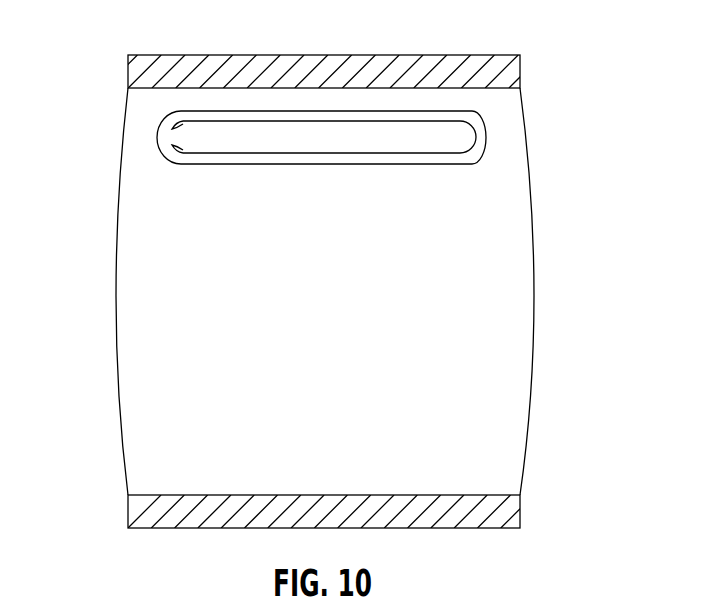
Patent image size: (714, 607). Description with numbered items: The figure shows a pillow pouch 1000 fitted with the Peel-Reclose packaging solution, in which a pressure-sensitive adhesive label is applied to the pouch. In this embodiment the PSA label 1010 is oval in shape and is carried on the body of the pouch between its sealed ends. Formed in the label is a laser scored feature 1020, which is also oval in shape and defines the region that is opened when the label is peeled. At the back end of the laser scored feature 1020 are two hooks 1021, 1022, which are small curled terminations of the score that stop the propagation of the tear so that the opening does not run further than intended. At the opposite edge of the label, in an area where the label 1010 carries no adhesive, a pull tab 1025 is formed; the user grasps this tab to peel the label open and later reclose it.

The pillow pouch 1000 is at (512, 245).
The PSA label 1010 is at (321, 116).
The laser scored feature 1020 is at (322, 162).
The hook 1021 is at (182, 158).
The hook 1022 is at (178, 114).
The pull tab 1025 is at (481, 130).